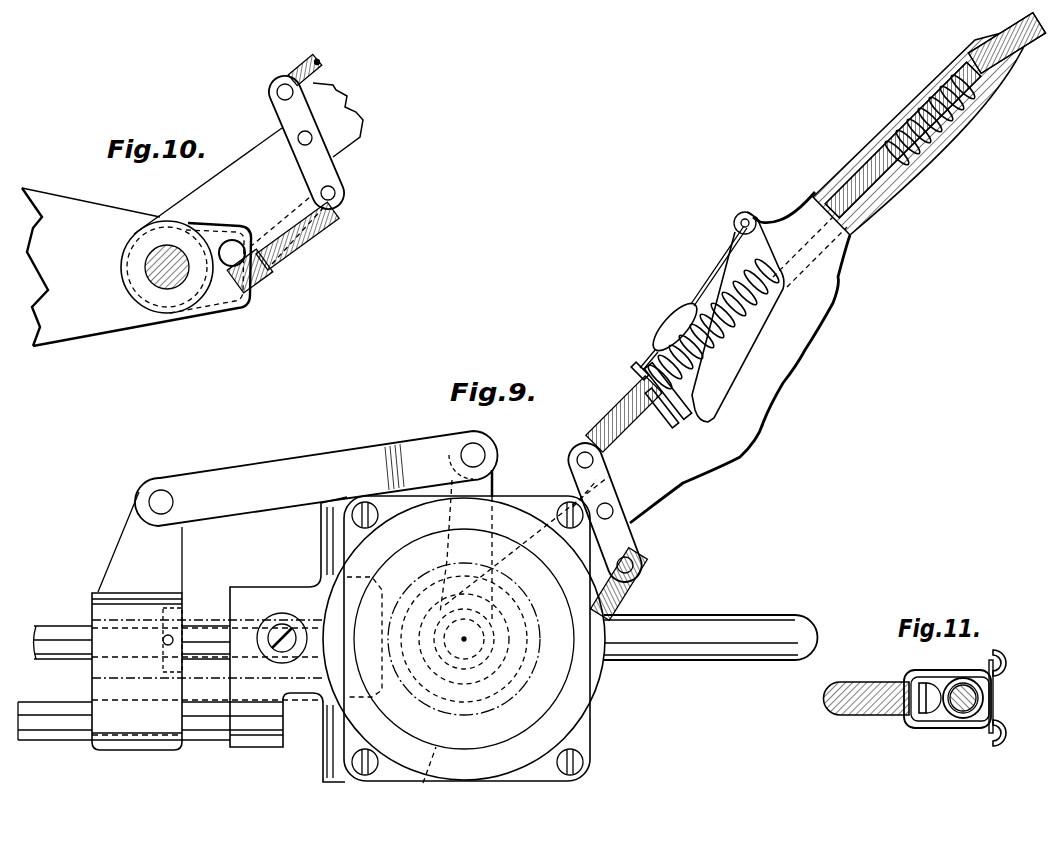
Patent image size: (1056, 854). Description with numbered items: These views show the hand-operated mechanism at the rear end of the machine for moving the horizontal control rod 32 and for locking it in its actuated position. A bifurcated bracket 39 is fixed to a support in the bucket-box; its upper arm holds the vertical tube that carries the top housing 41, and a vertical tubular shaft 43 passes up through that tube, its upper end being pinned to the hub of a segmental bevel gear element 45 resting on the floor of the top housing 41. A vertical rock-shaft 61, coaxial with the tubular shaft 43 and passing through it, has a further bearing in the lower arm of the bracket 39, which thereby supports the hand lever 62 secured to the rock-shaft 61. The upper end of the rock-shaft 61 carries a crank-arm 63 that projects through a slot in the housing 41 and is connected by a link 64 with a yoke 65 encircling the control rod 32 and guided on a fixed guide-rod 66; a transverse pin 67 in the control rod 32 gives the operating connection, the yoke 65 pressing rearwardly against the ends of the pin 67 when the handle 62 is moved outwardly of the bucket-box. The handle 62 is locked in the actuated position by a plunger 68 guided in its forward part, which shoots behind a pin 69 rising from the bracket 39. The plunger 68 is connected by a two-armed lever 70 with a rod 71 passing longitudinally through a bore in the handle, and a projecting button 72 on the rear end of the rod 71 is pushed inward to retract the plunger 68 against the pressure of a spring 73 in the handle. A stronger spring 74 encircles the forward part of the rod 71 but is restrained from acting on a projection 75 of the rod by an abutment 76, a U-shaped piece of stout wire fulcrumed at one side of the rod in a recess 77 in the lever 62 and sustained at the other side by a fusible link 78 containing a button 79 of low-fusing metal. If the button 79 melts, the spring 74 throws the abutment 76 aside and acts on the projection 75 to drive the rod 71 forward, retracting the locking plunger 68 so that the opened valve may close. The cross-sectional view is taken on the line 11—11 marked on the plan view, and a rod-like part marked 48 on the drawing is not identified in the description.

In FIG. 9, the control cable assembly 11 is at (810, 268).
In FIG. 9, the horizontal control rod 32 is at (55, 626).
In FIG. 10, the bifurcated bracket 39 is at (90, 333).
In FIG. 9, the top housing 41 is at (595, 695).
In FIG. 9, the vertical tubular shaft 43 is at (466, 672).
In FIG. 9, the segmental bevel gear element 45 is at (429, 776).
In FIG. 9, the rod 48 is at (762, 653).
In FIG. 10, the vertical rock-shaft 61 is at (168, 283).
In FIG. 9, the vertical rock-shaft 61 is at (480, 647).
In FIG. 10, the hand lever 62 is at (363, 135).
In FIG. 9, the hand lever 62 is at (773, 410).
In FIG. 11, the hand lever 62 is at (849, 715).
In FIG. 9, the crank-arm 63 is at (493, 486).
In FIG. 9, the link 64 is at (313, 465).
In FIG. 9, the yoke 65 is at (98, 590).
In FIG. 9, the fixed guide-rod 66 is at (201, 742).
In FIG. 9, the transverse pin 67 is at (172, 635).
In FIG. 10, the plunger 68 is at (263, 270).
In FIG. 9, the plunger 68 is at (645, 558).
In FIG. 10, the pin 69 is at (227, 264).
In FIG. 10, the two-armed lever 70 is at (330, 166).
In FIG. 9, the two-armed lever 70 is at (630, 533).
In FIG. 10, the rod 71 is at (322, 66).
In FIG. 9, the rod 71 is at (618, 413).
In FIG. 11, the rod 71 is at (964, 708).
In FIG. 9, the projecting button 72 is at (1013, 52).
In FIG. 9, the spring 73 is at (933, 150).
In FIG. 9, the spring 74 is at (763, 313).
In FIG. 11, the spring 74 is at (959, 678).
In FIG. 9, the projection 75 is at (630, 378).
In FIG. 9, the abutment 76 is at (671, 420).
In FIG. 11, the abutment 76 is at (926, 672).
In FIG. 9, the recess 77 is at (687, 412).
In FIG. 11, the recess 77 is at (923, 712).
In FIG. 9, the fusible link 78 is at (707, 278).
In FIG. 11, the fusible link 78 is at (1003, 750).
In FIG. 9, the button 79 is at (673, 313).